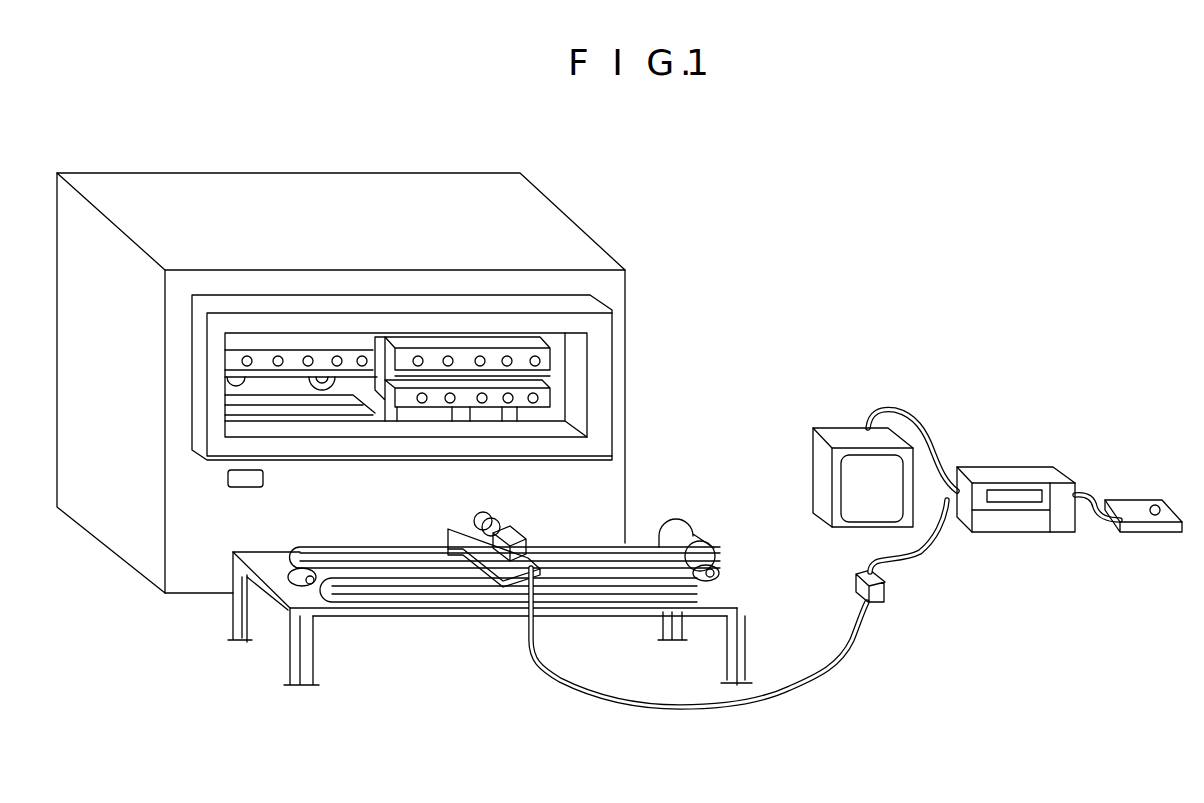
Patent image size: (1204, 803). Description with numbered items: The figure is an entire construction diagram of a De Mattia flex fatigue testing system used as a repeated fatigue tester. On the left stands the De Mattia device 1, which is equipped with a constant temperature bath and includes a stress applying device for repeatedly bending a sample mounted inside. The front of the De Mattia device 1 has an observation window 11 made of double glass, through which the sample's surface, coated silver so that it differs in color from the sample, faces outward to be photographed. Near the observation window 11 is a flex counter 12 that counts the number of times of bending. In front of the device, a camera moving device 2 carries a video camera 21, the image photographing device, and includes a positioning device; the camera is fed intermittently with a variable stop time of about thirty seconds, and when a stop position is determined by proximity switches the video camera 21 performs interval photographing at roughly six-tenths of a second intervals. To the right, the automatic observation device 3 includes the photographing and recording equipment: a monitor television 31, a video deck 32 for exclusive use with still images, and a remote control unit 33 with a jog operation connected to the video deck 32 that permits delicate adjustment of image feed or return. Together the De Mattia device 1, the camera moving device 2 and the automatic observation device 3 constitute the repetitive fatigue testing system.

The De Mattia device 1 is at (601, 226).
The observation window 11 is at (578, 377).
The flex counter 12 is at (228, 479).
The camera moving device 2 is at (267, 633).
The video camera 21 is at (512, 535).
The automatic observation device 3 is at (992, 521).
The monitor television 31 is at (840, 435).
The video deck 32 is at (1000, 472).
The remote control unit 33 is at (1140, 503).